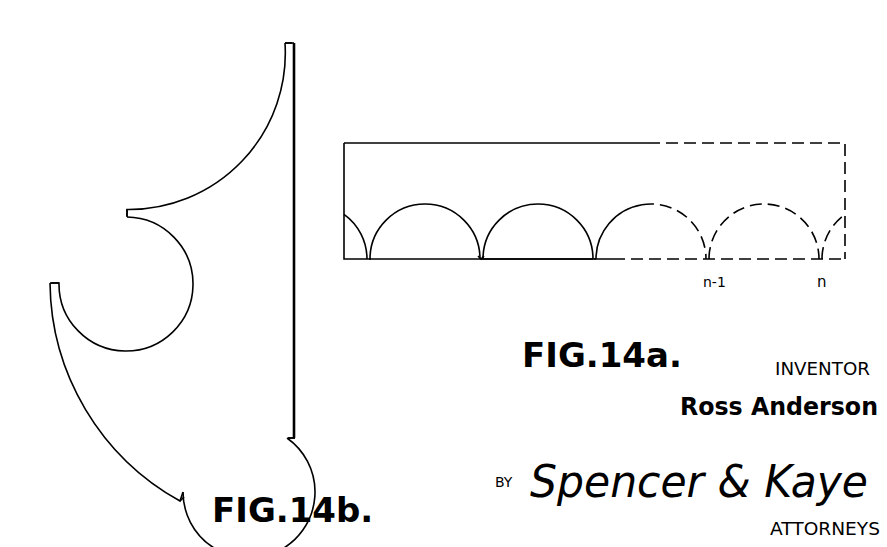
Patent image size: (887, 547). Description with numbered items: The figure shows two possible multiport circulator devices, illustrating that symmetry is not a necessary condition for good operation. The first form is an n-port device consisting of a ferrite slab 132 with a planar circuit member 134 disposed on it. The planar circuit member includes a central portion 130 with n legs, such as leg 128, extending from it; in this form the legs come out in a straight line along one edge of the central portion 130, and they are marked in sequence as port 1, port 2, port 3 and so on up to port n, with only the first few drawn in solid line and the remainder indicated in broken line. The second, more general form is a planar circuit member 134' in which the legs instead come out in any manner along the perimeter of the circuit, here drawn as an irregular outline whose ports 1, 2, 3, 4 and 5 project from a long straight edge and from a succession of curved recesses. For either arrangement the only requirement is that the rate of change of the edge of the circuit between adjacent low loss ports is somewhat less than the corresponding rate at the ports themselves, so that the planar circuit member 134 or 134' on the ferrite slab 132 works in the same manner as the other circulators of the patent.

In FIG. 14B, the planar circuit member 134' is at (200, 295).
In FIG. 14A, the planar circuit member 134 is at (594, 179).
In FIG. 14A, the central portion 130 is at (606, 159).
In FIG. 14A, the leg 128 is at (480, 259).
In FIG. 14A, the ferrite slab 132 is at (525, 246).
In FIG. 14B, the point 1 is at (290, 32).
In FIG. 14A, the point 1 is at (370, 275).
In FIG. 14B, the point 2 is at (116, 209).
In FIG. 14A, the point 2 is at (483, 275).
In FIG. 14B, the point 3 is at (53, 272).
In FIG. 14A, the point 3 is at (597, 275).
In FIG. 14B, the point 4 is at (183, 512).
In FIG. 14B, the point 5 is at (294, 450).